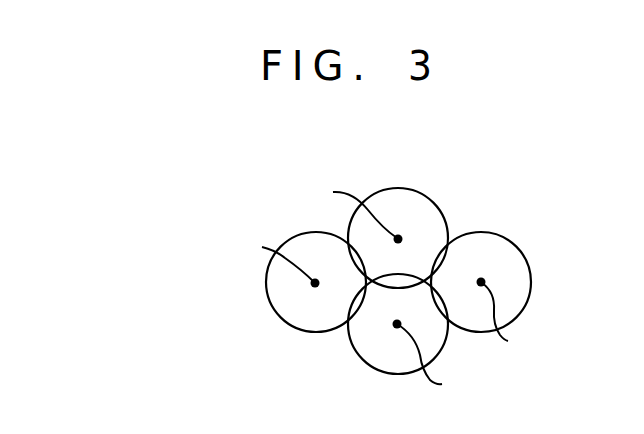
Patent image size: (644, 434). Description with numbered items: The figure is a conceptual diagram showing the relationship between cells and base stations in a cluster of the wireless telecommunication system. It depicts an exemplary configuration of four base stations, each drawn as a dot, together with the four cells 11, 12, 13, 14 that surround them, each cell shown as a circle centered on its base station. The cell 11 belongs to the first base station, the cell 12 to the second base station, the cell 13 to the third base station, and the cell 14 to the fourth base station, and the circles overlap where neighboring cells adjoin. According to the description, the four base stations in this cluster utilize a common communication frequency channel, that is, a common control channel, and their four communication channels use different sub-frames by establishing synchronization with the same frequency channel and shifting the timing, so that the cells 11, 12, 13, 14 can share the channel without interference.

The cell 11 is at (433, 204).
The cell 12 is at (268, 305).
The cell 13 is at (366, 364).
The cell 14 is at (531, 282).